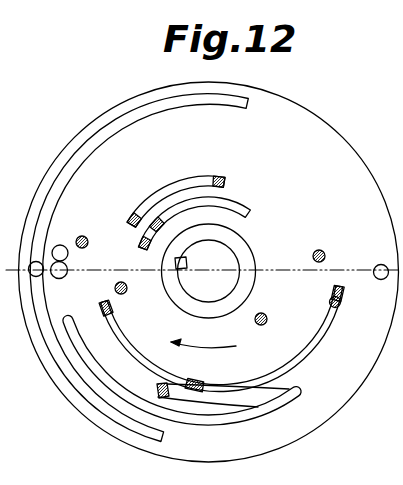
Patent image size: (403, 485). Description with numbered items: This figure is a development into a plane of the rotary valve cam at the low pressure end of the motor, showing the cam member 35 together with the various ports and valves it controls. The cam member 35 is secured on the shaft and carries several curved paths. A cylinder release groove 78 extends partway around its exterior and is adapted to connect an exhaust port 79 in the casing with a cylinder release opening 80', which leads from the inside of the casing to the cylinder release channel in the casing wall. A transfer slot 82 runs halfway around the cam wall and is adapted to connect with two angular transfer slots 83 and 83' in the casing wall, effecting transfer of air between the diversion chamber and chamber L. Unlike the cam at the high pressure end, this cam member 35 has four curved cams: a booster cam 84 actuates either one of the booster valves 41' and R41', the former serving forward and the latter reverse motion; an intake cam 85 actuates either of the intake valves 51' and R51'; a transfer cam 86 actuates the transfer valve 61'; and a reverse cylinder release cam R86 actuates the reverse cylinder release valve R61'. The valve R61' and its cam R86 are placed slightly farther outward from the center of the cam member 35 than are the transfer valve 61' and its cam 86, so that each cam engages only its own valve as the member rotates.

The cam member 35 is at (341, 137).
The transfer slot 82 is at (93, 147).
The cylinder release groove 78 is at (114, 382).
The intake cam 85 is at (322, 339).
The transfer cam 86 is at (200, 180).
The booster cam 84 is at (236, 206).
The booster valve 41' is at (175, 223).
The reverse cylinder release cam R86 is at (236, 347).
The angular transfer slot 83 is at (24, 252).
The exhaust port 79 is at (61, 245).
The cylinder release opening 80' is at (66, 283).
The intake valve 51' is at (97, 250).
The transfer valve 61' is at (134, 297).
The booster valve R41' is at (278, 307).
The reverse cylinder release valve R61' is at (320, 246).
The angular transfer slot 83' is at (377, 260).
The intake valve R51' is at (356, 311).